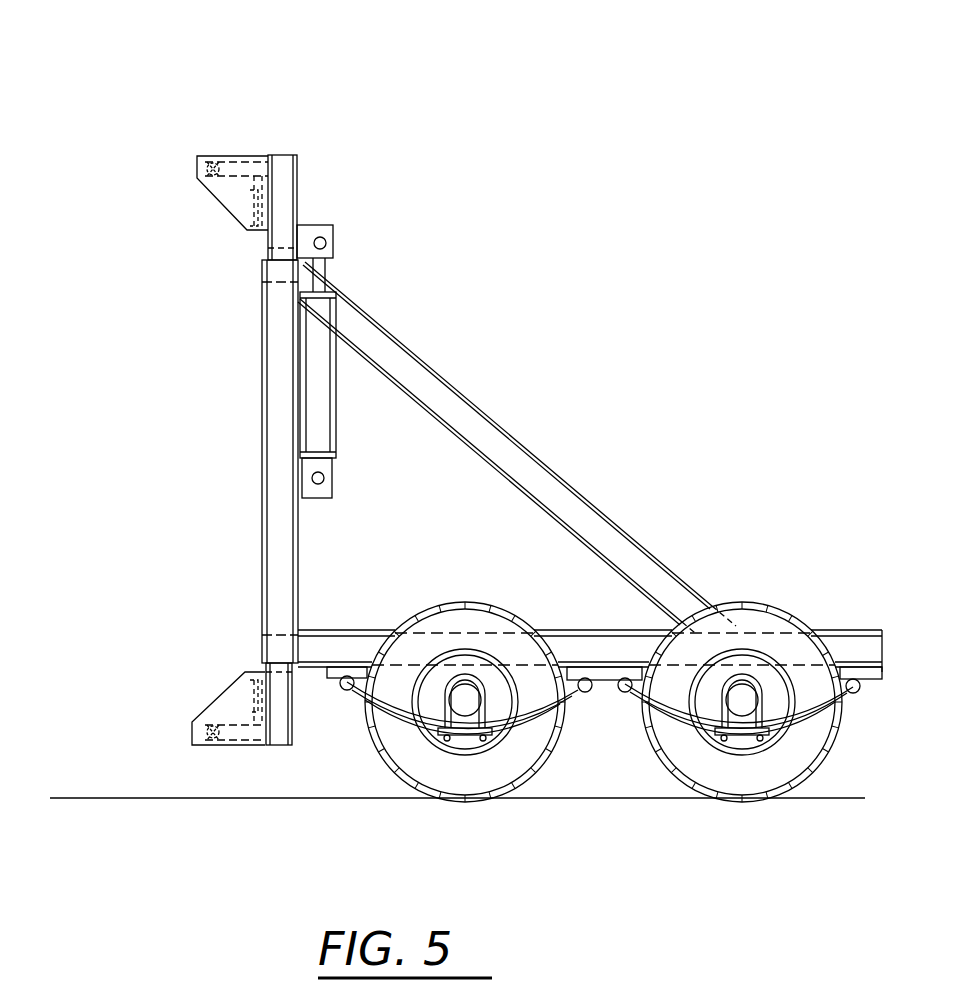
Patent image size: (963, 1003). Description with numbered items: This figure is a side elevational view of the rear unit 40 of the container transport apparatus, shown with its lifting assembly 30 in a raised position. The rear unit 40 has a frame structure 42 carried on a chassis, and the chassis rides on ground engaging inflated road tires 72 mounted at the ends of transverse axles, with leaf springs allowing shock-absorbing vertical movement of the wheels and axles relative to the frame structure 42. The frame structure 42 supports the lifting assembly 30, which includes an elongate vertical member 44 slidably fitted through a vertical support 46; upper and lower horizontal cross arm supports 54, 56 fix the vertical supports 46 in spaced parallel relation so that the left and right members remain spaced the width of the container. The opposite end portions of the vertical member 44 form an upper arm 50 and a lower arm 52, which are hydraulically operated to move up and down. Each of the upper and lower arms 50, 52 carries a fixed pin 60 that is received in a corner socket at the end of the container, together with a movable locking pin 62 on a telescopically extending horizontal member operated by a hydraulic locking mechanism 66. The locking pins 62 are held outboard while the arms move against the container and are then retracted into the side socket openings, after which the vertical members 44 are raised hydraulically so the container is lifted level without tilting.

The lifting assembly 30 is at (342, 258).
The rear unit 40 is at (449, 368).
The frame structure 42 is at (597, 650).
The elongate vertical member 44 is at (268, 248).
The vertical support 46 is at (262, 535).
The upper arm 50 is at (298, 198).
The lower arm 52 is at (285, 713).
The upper horizontal cross arm support 54 is at (265, 282).
The lower horizontal cross arm support 56 is at (263, 635).
The fixed pin 60 is at (248, 172).
The movable locking pin 62 is at (210, 172).
The hydraulic locking mechanism 66 is at (255, 205).
The road tire 72 is at (475, 780).